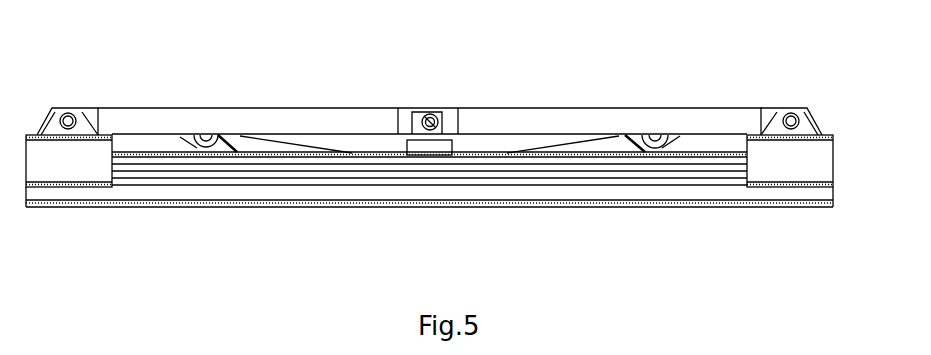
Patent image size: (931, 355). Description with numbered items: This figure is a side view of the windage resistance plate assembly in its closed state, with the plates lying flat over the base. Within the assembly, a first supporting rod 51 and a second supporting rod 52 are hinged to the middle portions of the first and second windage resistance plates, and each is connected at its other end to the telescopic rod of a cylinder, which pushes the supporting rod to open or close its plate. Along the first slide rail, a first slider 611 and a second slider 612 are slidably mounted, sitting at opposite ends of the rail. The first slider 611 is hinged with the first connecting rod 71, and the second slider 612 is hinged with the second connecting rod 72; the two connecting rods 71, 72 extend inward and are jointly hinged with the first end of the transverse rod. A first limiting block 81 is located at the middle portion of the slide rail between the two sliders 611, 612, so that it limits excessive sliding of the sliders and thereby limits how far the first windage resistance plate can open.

The first connecting rod 71 is at (182, 115).
The second connecting rod 72 is at (655, 118).
The first supporting rod 51 is at (287, 142).
The second supporting rod 52 is at (570, 145).
The first limiting block 81 is at (427, 148).
The first slider 611 is at (62, 160).
The second slider 612 is at (778, 162).